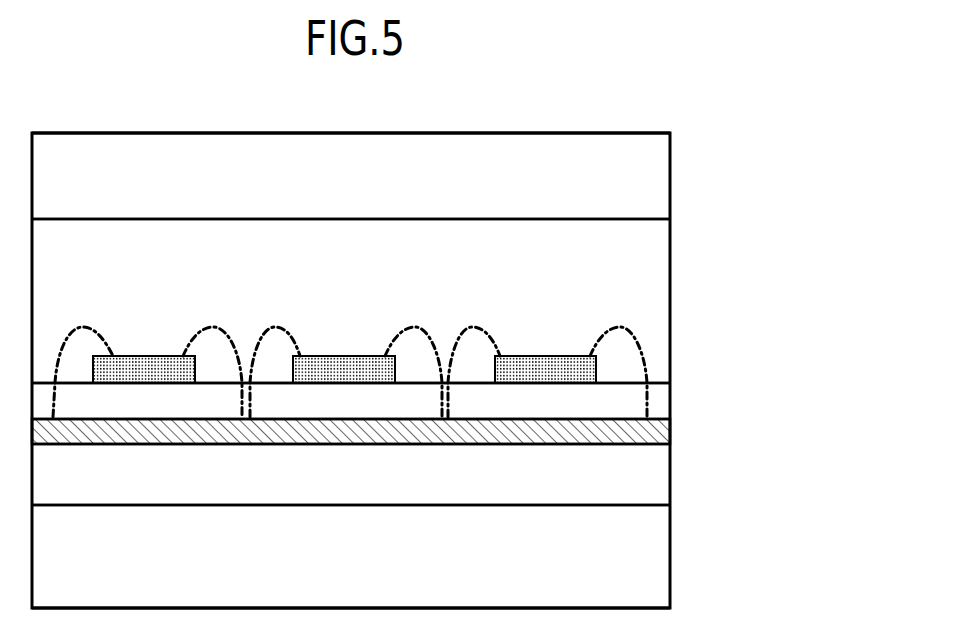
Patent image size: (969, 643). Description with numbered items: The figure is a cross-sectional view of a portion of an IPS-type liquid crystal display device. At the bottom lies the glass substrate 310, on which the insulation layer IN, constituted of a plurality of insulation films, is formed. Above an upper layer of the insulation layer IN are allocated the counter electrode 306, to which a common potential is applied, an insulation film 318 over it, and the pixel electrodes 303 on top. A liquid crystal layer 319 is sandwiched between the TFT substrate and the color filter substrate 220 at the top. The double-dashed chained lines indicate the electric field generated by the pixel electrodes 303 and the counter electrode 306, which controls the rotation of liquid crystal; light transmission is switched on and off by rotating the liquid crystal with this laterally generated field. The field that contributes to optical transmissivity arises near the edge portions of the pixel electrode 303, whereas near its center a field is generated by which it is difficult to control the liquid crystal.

The color filter substrate 220 is at (643, 181).
The liquid crystal layer 319 is at (641, 257).
The pixel electrode 303 is at (553, 355).
The insulation film 318 is at (657, 406).
The counter electrode 306 is at (672, 432).
The insulation layer IN is at (637, 475).
The glass substrate 310 is at (637, 577).